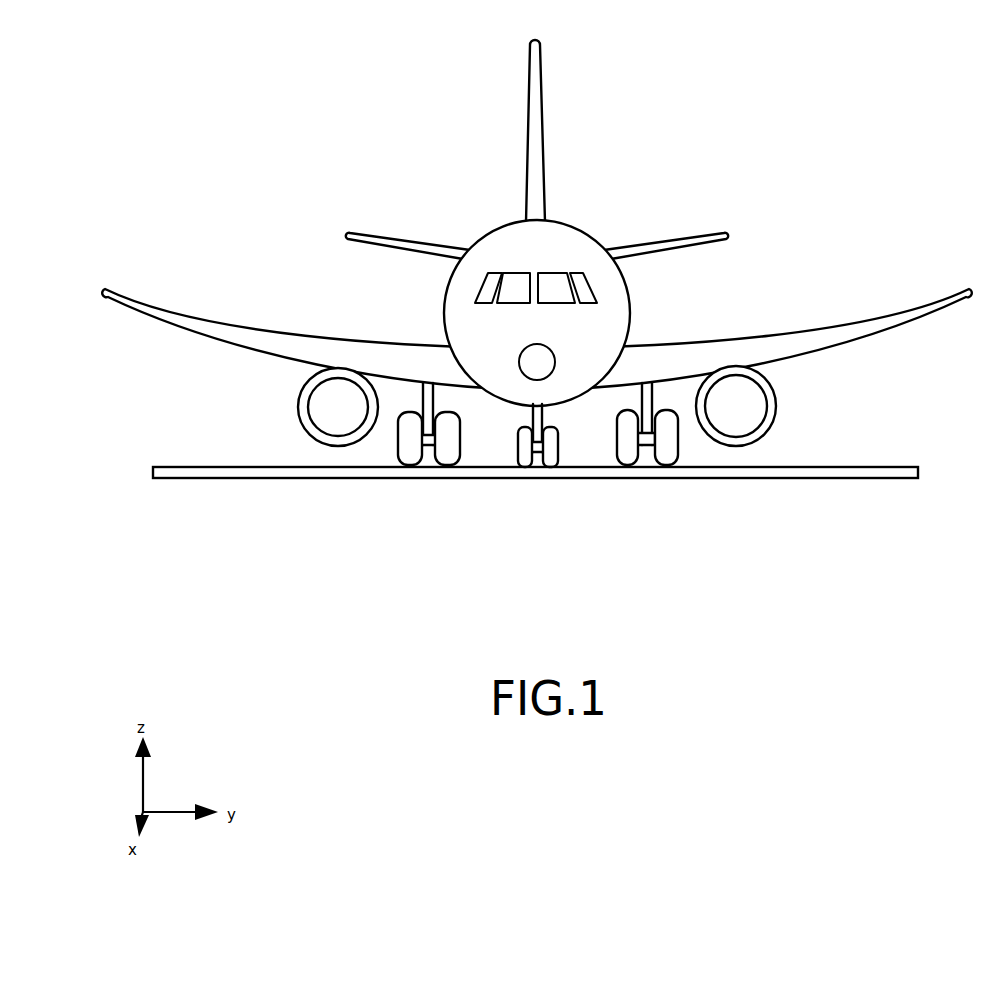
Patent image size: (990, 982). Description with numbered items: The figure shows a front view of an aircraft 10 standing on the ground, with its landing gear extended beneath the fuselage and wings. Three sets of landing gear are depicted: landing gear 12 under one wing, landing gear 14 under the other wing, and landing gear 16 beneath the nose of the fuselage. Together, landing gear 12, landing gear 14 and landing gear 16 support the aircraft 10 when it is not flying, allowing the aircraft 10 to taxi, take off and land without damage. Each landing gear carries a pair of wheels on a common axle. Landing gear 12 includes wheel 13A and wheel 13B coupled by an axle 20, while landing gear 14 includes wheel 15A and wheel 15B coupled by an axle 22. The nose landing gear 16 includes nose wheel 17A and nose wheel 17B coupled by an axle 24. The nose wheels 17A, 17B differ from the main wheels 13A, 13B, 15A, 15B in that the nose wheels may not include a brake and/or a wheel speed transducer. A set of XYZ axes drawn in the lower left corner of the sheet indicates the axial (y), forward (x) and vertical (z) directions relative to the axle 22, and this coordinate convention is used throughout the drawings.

The aircraft 10 is at (537, 305).
The landing gear 12 is at (729, 417).
The wheel 13A is at (677, 450).
The wheel 13B is at (634, 418).
The landing gear 14 is at (345, 490).
The wheel 15A is at (397, 456).
The wheel 15B is at (458, 452).
The landing gear 16 is at (583, 436).
The nose wheel 17A is at (558, 452).
The nose wheel 17B is at (518, 455).
The axle 20 is at (648, 447).
The axle 22 is at (427, 449).
The axle 24 is at (540, 451).